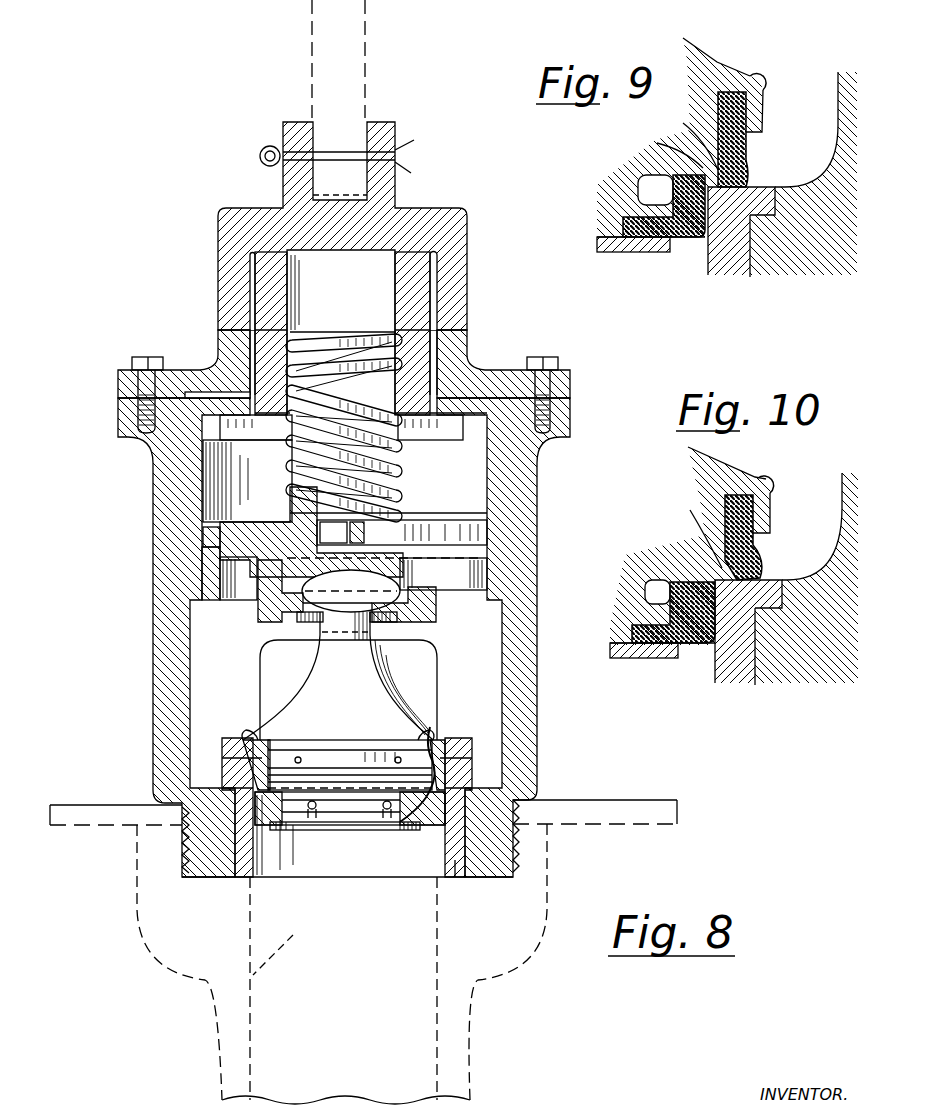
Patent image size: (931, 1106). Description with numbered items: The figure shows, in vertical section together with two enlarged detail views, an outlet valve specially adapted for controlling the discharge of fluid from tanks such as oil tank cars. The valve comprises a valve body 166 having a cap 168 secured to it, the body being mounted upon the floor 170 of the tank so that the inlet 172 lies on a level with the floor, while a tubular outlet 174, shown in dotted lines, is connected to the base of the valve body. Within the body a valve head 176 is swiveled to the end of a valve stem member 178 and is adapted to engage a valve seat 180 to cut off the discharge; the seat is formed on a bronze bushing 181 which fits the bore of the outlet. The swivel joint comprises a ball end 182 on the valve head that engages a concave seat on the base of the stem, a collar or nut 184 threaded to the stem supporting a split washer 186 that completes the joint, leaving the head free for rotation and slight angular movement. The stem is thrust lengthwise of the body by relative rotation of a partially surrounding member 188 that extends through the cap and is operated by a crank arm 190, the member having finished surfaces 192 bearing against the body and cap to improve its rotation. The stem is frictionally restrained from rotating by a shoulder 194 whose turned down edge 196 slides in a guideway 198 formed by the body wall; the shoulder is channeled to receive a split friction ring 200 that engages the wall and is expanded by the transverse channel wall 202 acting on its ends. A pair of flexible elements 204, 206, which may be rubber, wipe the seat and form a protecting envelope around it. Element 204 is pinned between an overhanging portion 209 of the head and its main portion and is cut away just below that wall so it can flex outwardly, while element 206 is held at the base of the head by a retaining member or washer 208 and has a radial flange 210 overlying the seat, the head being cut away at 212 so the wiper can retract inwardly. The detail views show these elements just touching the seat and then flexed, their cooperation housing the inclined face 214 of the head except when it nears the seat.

In FIG. 8, the valve body 166 is at (155, 658).
In FIG. 9, the valve body 166 is at (845, 117).
In FIG. 10, the valve body 166 is at (843, 510).
In FIG. 8, the cap 168 is at (218, 292).
In FIG. 8, the floor 170 is at (107, 780).
In FIG. 8, the inlet 172 is at (430, 685).
In FIG. 8, the tubular outlet 174 is at (318, 867).
In FIG. 8, the valve head 176 is at (417, 703).
In FIG. 9, the valve head 176 is at (717, 62).
In FIG. 10, the valve head 176 is at (727, 470).
In FIG. 8, the valve stem member 178 is at (393, 510).
In FIG. 8, the valve seat 180 is at (513, 830).
In FIG. 9, the valve seat 180 is at (708, 195).
In FIG. 10, the valve seat 180 is at (757, 617).
In FIG. 8, the bronze bushing 181 is at (455, 867).
In FIG. 9, the bronze bushing 181 is at (728, 272).
In FIG. 10, the bronze bushing 181 is at (738, 679).
In FIG. 8, the ball end 182 is at (343, 583).
In FIG. 8, the collar or nut 184 is at (268, 613).
In FIG. 8, the split washer 186 is at (390, 625).
In FIG. 8, the partially surrounding member 188 is at (420, 310).
In FIG. 8, the crank arm 190 is at (310, 53).
In FIG. 8, the finished surfaces 192 is at (482, 374).
In FIG. 8, the shoulder 194 is at (277, 527).
In FIG. 8, the turned down edge 196 is at (203, 577).
In FIG. 8, the guideway 198 is at (200, 477).
In FIG. 8, the split friction ring 200 is at (203, 533).
In FIG. 8, the transverse channel wall 202 is at (357, 543).
In FIG. 8, the flexible element 204 is at (473, 763).
In FIG. 9, the flexible element 204 is at (744, 167).
In FIG. 10, the flexible element 204 is at (740, 558).
In FIG. 8, the flexible element or wiper 206 is at (422, 823).
In FIG. 9, the flexible element or wiper 206 is at (682, 240).
In FIG. 10, the flexible element or wiper 206 is at (697, 647).
In FIG. 8, the retaining member or washer 208 is at (403, 827).
In FIG. 9, the retaining member or washer 208 is at (645, 252).
In FIG. 10, the retaining member or washer 208 is at (660, 657).
In FIG. 8, the overhanging portion 209 is at (222, 752).
In FIG. 9, the overhanging portion 209 is at (765, 95).
In FIG. 10, the overhanging portion 209 is at (768, 506).
In FIG. 9, the radial flange 210 is at (657, 143).
In FIG. 10, the radial flange 210 is at (717, 583).
In FIG. 9, the cut away 212 is at (668, 205).
In FIG. 10, the cut away 212 is at (667, 601).
In FIG. 9, the inclined face 214 is at (707, 138).
In FIG. 10, the inclined face 214 is at (718, 565).